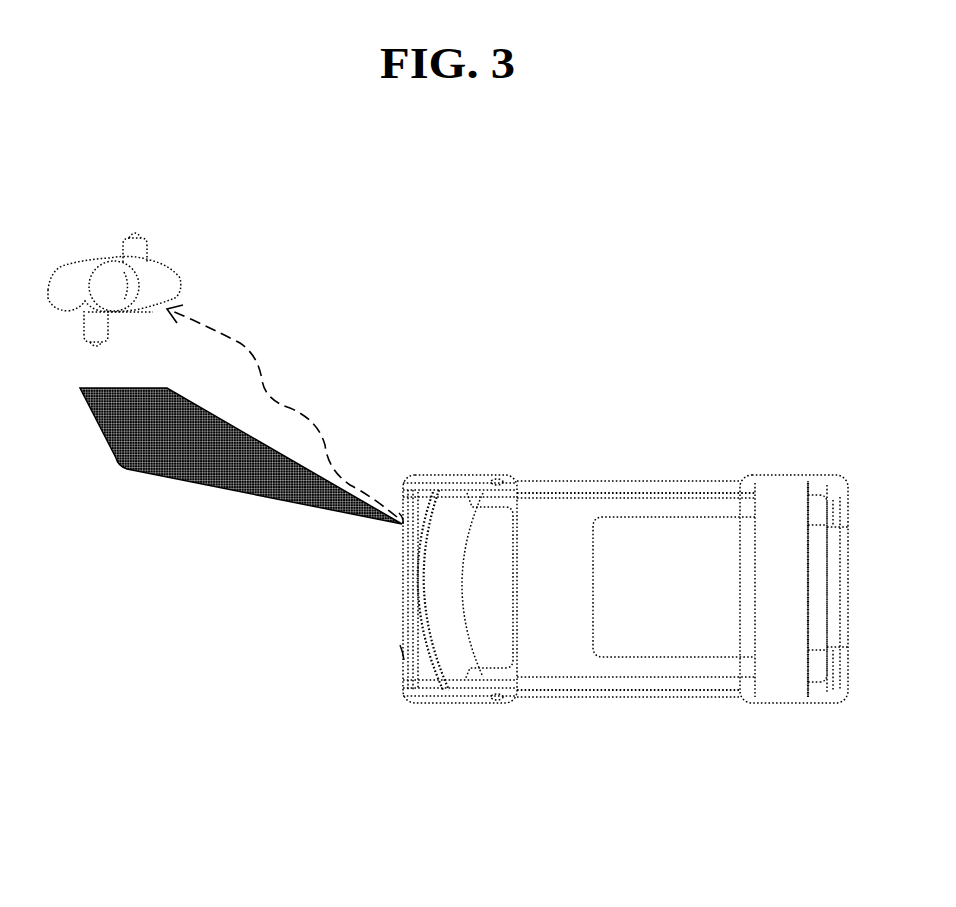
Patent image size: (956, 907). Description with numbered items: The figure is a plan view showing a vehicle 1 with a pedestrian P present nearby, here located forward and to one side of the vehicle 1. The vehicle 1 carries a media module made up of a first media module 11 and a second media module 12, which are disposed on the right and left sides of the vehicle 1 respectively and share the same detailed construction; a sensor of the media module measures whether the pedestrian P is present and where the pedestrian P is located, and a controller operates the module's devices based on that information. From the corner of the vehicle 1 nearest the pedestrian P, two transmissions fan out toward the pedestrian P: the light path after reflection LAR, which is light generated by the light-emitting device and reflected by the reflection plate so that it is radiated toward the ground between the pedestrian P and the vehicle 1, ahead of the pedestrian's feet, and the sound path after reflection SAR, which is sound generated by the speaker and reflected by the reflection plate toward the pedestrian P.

The vehicle 1 is at (716, 444).
The first media module 11 is at (402, 516).
The second media module 12 is at (400, 648).
The pedestrian P is at (73, 278).
The sound path after reflection SAR is at (235, 360).
The light path after reflection LAR is at (168, 443).